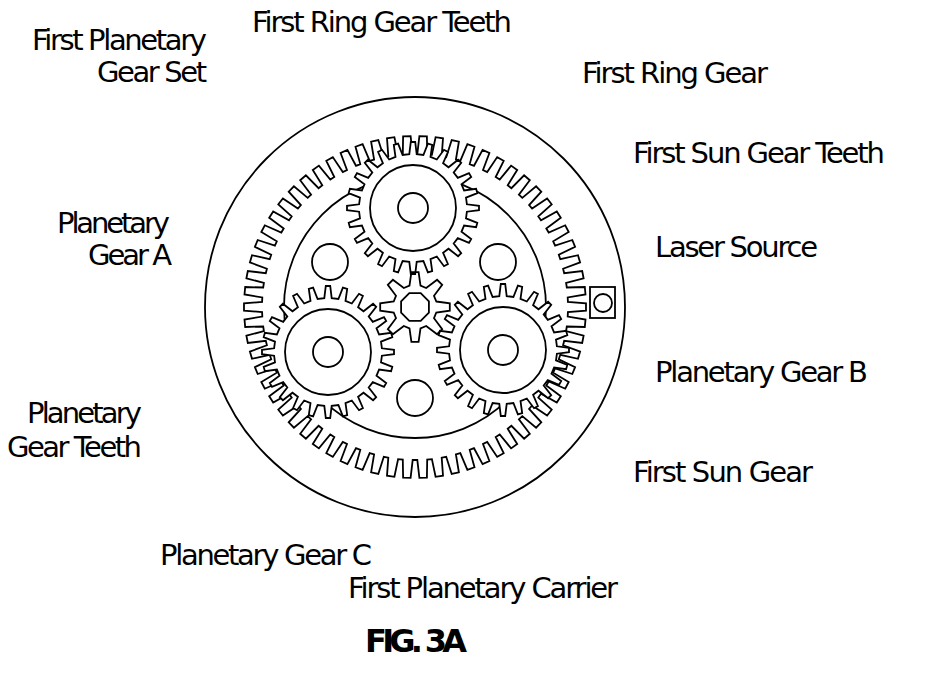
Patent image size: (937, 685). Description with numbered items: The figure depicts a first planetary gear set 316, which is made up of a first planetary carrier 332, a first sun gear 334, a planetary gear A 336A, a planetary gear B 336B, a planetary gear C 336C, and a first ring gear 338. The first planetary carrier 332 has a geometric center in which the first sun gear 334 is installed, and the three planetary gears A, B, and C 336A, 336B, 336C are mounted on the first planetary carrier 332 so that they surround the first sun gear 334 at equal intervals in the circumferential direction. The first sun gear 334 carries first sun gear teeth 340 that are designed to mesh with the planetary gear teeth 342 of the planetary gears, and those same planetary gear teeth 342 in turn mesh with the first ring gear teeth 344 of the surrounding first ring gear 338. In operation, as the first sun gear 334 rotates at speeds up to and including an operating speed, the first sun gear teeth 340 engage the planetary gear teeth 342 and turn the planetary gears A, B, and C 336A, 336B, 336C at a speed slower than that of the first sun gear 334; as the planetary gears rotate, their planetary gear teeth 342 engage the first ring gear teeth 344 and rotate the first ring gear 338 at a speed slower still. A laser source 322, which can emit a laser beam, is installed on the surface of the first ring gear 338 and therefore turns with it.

The first planetary gear set 316 is at (245, 125).
The first ring gear teeth 344 is at (345, 148).
The first ring gear 338 is at (434, 259).
The first sun gear teeth 340 is at (440, 290).
The laser source 322 is at (608, 303).
The planetary gear A 336A is at (380, 186).
The planetary gear B 336B is at (530, 343).
The planetary gear C 336C is at (247, 414).
The planetary gear teeth 342 is at (263, 317).
The first sun gear 334 is at (528, 317).
The first planetary carrier 332 is at (409, 358).